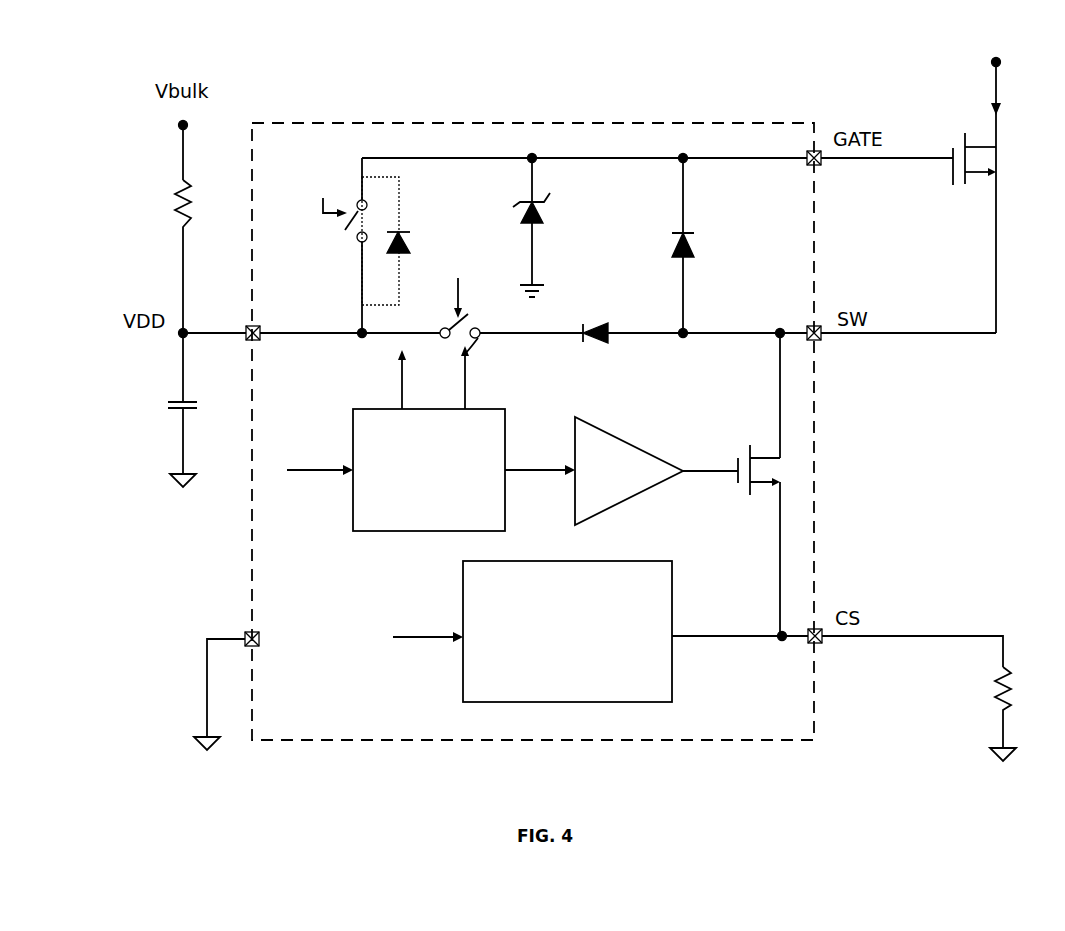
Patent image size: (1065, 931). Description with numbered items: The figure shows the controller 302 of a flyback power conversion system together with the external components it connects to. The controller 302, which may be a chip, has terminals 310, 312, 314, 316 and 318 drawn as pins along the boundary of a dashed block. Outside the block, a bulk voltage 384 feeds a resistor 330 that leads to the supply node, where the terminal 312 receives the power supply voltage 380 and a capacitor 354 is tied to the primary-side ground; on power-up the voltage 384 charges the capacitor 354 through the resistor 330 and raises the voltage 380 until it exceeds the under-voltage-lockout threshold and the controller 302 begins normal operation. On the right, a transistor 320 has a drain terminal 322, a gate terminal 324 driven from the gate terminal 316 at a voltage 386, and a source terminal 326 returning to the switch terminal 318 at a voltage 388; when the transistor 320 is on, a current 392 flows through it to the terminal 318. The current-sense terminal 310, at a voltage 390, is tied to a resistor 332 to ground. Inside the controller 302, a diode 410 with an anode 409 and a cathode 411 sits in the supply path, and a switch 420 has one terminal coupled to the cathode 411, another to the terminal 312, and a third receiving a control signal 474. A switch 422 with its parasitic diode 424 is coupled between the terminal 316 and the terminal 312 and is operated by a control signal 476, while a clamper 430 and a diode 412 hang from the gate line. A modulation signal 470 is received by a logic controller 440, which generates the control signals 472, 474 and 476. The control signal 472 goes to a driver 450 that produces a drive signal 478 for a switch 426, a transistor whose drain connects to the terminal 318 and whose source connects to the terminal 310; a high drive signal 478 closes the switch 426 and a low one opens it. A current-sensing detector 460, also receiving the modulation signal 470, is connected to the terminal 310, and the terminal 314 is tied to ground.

The controller 302 is at (797, 740).
The terminal 310 is at (819, 643).
The terminal 312 is at (249, 340).
The terminal 314 is at (249, 632).
The terminal 316 is at (818, 165).
The terminal 318 is at (818, 340).
The transistor 320 is at (980, 128).
The drain terminal 322 is at (996, 142).
The gate terminal 324 is at (953, 166).
The source terminal 326 is at (996, 178).
The resistor 330 is at (191, 200).
The resistor 332 is at (1009, 704).
The capacitor 354 is at (170, 402).
The power supply voltage 380 is at (216, 333).
The voltage 384 is at (183, 125).
The voltage 386 is at (923, 158).
The voltage 388 is at (996, 222).
The voltage 390 is at (950, 636).
The current 392 is at (996, 97).
The anode 409 is at (610, 330).
The diode 410 is at (592, 342).
The cathode 411 is at (583, 330).
The diode 412 is at (690, 257).
The switch 420 is at (481, 334).
The switch 422 is at (345, 230).
The parasitic diode 424 is at (410, 243).
The switch 426 is at (738, 488).
The clamper 430 is at (543, 218).
The logic controller 440 is at (405, 531).
The driver 450 is at (660, 445).
The current-sensing detector 460 is at (650, 702).
The modulation signal 470 is at (308, 470).
The control signal 472 is at (535, 470).
The control signal 474 is at (458, 290).
The control signal 476 is at (485, 372).
The drive signal 478 is at (706, 471).